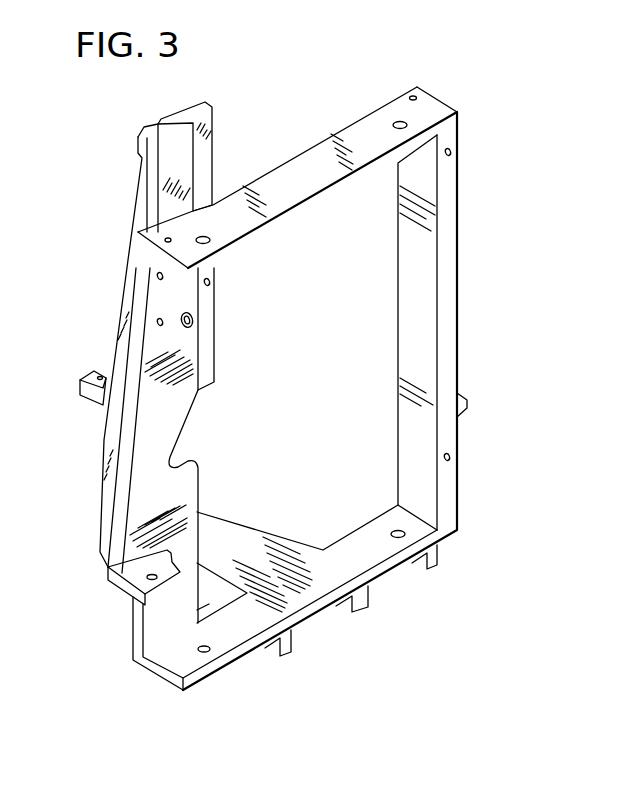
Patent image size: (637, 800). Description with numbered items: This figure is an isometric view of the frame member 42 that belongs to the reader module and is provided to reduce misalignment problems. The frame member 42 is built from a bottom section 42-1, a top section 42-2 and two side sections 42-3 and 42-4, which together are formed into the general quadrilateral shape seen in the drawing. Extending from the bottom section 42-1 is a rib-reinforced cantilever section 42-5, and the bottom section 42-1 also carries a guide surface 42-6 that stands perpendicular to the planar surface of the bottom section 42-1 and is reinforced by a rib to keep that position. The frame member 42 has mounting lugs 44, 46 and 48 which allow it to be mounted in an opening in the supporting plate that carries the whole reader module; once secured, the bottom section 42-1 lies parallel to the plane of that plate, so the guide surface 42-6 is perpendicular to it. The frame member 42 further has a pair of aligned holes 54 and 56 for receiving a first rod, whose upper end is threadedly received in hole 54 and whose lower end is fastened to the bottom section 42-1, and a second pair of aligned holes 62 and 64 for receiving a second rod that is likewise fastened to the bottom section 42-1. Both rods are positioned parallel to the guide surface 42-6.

The frame member 42 is at (466, 240).
The bottom section 42-1 is at (303, 597).
The top section 42-2 is at (305, 162).
The side section 42-3 is at (448, 315).
The side section 42-4 is at (170, 418).
The cantilever section 42-5 is at (227, 537).
The guide surface 42-6 is at (175, 160).
The mounting lug 44 is at (138, 577).
The mounting lug 46 is at (468, 402).
The mounting lug 48 is at (80, 382).
The hole 54 is at (208, 241).
The hole 56 is at (206, 653).
The hole 62 is at (397, 123).
The hole 64 is at (402, 537).